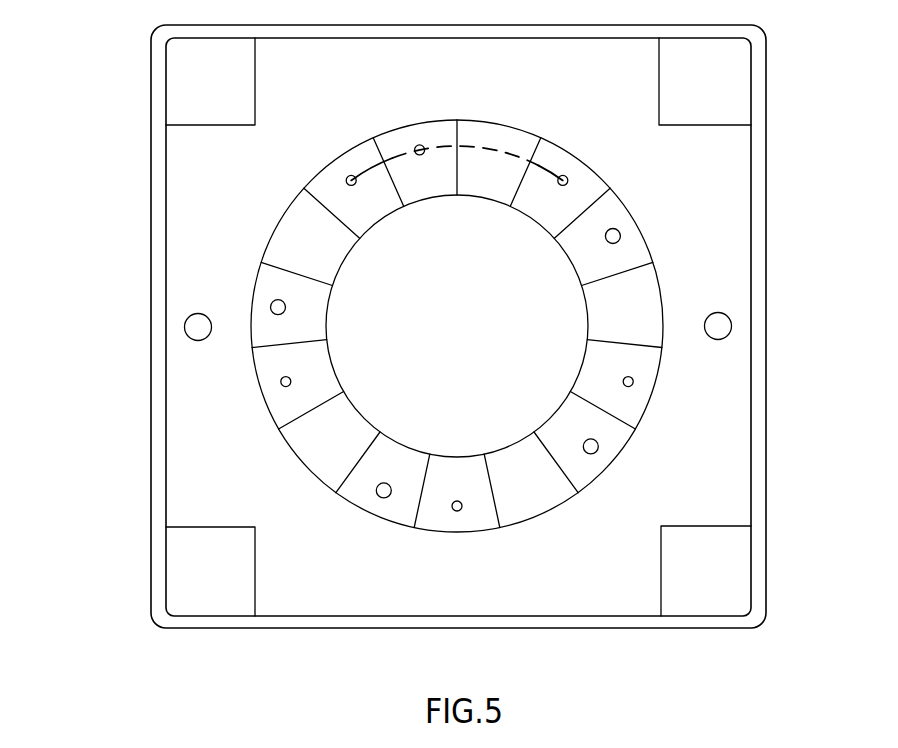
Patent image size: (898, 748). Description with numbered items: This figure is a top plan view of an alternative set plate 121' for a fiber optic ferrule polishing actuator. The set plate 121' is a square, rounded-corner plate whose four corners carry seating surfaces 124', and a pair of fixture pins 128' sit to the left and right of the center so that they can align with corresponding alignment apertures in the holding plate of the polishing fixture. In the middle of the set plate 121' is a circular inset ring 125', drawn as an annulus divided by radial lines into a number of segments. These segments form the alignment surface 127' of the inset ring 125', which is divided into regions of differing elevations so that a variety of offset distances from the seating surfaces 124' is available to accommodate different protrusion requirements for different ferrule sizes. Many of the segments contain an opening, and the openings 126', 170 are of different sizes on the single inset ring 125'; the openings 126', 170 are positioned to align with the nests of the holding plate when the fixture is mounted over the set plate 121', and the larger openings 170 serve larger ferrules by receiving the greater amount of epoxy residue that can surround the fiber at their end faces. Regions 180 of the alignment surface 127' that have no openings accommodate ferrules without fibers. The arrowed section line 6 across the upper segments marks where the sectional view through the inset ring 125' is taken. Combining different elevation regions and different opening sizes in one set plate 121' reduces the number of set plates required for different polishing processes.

The set plate 121' is at (394, 326).
The seating surfaces 124' is at (450, 334).
The inset ring 125' is at (434, 326).
The openings 126' is at (673, 406).
The alignment surface 127' is at (346, 529).
The fixture pins 128' is at (450, 311).
The openings 170 is at (617, 228).
The regions 180 is at (652, 285).
The section line 6- 6 is at (351, 180).